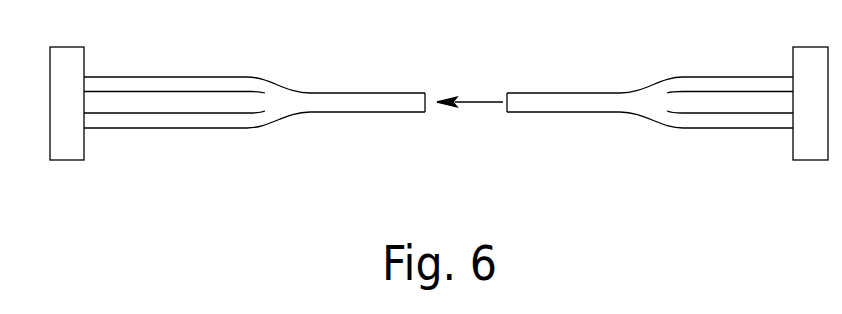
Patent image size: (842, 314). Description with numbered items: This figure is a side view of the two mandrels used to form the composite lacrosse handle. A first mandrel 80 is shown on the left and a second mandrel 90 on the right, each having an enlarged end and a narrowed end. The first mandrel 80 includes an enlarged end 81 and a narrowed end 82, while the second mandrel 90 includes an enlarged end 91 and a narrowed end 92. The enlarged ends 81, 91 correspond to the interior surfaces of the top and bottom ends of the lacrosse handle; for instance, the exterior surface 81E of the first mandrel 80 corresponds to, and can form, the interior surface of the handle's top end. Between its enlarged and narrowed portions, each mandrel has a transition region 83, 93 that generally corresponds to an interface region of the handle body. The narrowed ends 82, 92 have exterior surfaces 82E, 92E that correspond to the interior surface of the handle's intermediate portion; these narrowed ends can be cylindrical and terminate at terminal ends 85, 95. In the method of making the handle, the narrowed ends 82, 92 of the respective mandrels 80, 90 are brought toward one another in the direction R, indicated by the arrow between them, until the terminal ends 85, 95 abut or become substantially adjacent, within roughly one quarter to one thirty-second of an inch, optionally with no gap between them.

The first mandrel 80 is at (68, 160).
The enlarged end 81 is at (153, 77).
The exterior surface 81E is at (207, 85).
The narrowed end 82 is at (400, 93).
The exterior surface 82E is at (348, 105).
The transition region 83 is at (275, 95).
The terminal end 85 is at (425, 112).
The direction R is at (470, 100).
The second mandrel 90 is at (803, 160).
The enlarged end 91 is at (723, 77).
The narrowed end 92 is at (525, 92).
The exterior surface 92E is at (588, 100).
The transition region 93 is at (658, 95).
The terminal end 95 is at (507, 112).